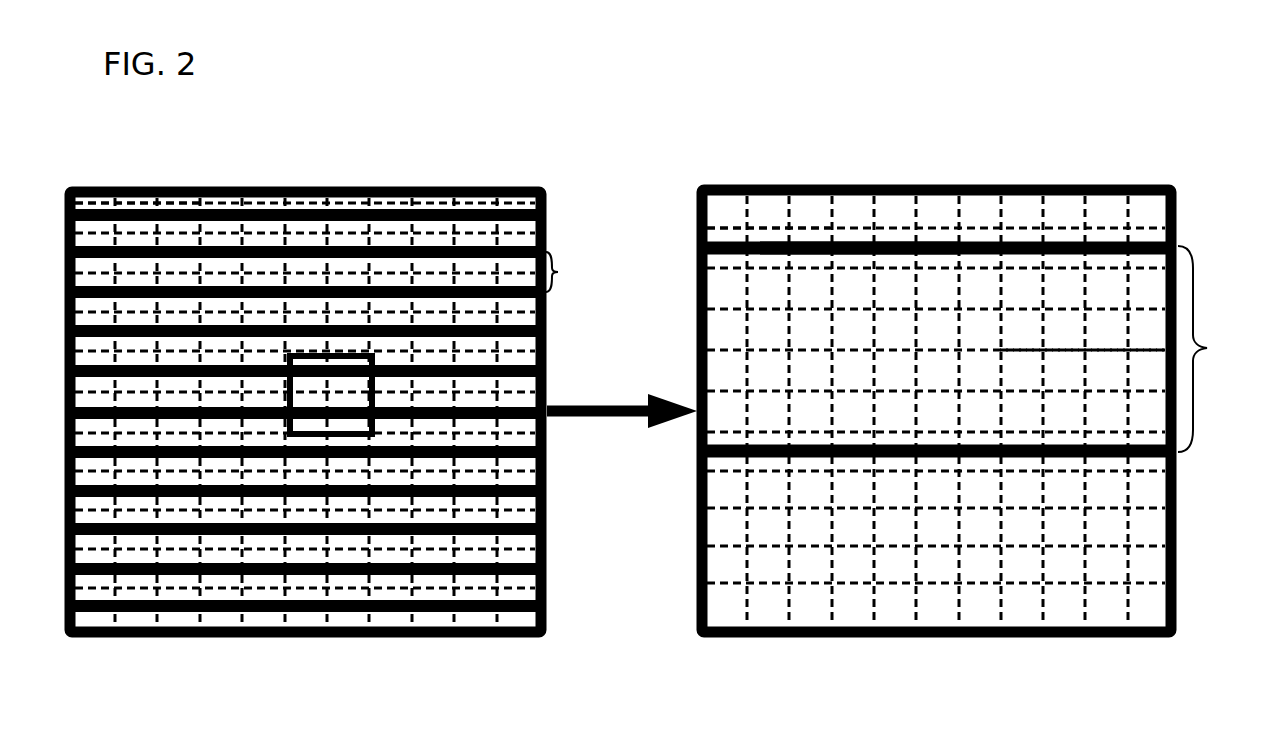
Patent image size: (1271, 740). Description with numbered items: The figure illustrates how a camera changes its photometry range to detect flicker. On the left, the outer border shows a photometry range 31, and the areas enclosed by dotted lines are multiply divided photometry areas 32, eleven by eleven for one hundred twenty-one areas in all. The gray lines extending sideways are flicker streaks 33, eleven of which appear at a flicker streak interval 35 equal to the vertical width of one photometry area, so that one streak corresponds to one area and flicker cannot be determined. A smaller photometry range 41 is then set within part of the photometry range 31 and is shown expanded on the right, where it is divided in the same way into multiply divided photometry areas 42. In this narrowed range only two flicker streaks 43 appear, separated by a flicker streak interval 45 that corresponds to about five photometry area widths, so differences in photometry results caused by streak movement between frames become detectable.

The photometry range 31 is at (428, 187).
The multiply divided photometry areas 32 is at (98, 205).
The flicker streaks 33 is at (216, 205).
The flicker streak interval 35 is at (499, 272).
The photometry range 41 is at (298, 352).
The multiply divided photometry areas 42 is at (722, 206).
The flicker streaks 43 is at (849, 245).
The flicker streak interval 45 is at (1120, 349).